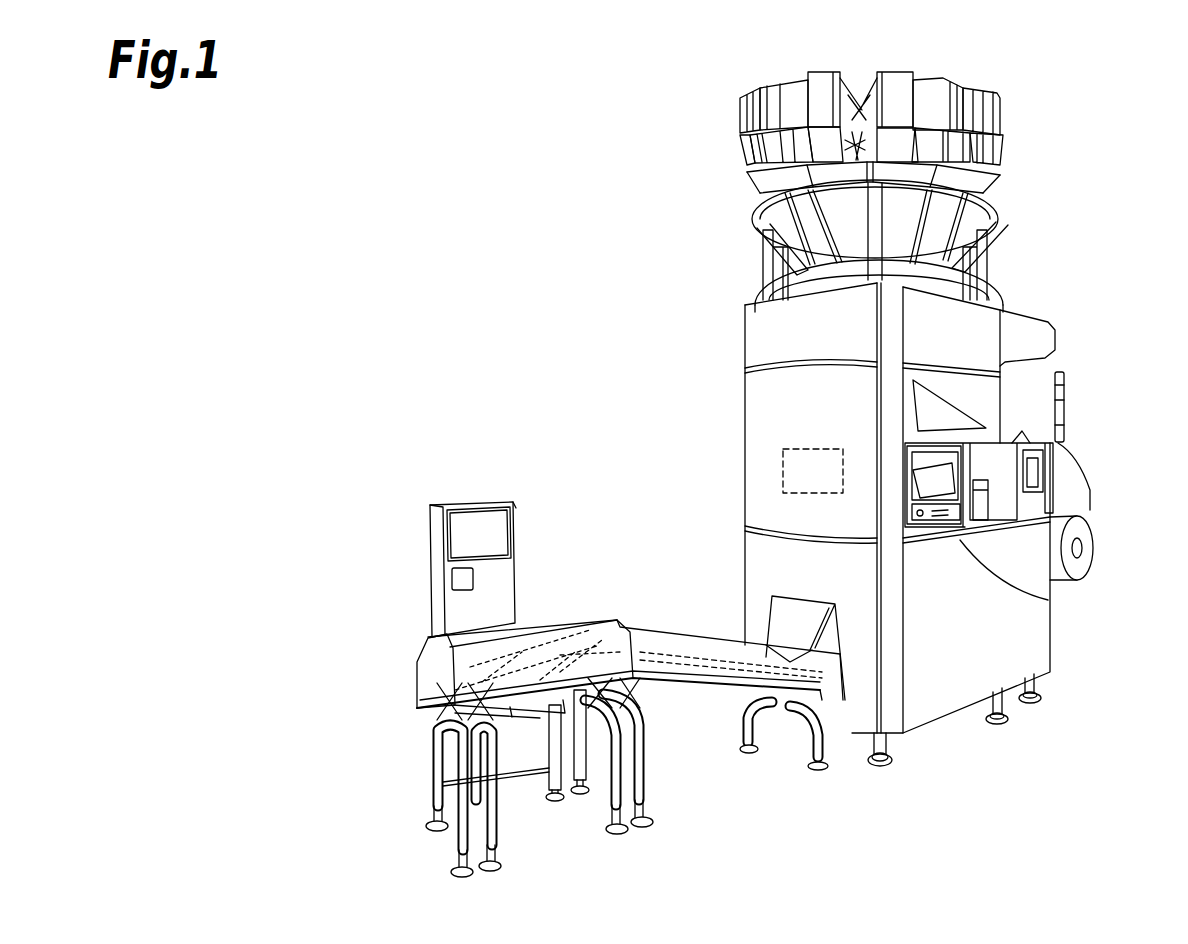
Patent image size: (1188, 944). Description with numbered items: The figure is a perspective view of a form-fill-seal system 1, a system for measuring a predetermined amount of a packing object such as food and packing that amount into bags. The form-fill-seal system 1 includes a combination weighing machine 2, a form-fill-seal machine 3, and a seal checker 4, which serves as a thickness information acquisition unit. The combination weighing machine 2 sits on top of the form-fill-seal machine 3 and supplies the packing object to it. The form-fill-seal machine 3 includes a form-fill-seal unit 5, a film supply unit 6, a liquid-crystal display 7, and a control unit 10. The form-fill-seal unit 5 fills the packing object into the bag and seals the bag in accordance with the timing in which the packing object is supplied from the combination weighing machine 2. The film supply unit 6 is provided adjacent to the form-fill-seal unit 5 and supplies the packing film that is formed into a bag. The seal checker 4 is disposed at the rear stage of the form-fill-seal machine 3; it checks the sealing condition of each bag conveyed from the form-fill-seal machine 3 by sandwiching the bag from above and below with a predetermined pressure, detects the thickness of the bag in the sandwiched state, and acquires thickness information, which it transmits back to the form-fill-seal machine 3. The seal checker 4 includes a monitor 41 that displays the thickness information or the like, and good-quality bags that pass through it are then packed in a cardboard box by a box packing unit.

The form-fill-seal system 1 is at (578, 261).
The combination weighing machine 2 is at (1024, 191).
The form-fill-seal machine 3 is at (720, 443).
The seal checker 4 is at (553, 598).
The form-fill-seal unit 5 is at (807, 415).
The film supply unit 6 is at (1097, 533).
The liquid-crystal display 7 is at (953, 530).
The control unit 10 is at (782, 470).
The monitor 41 is at (488, 493).